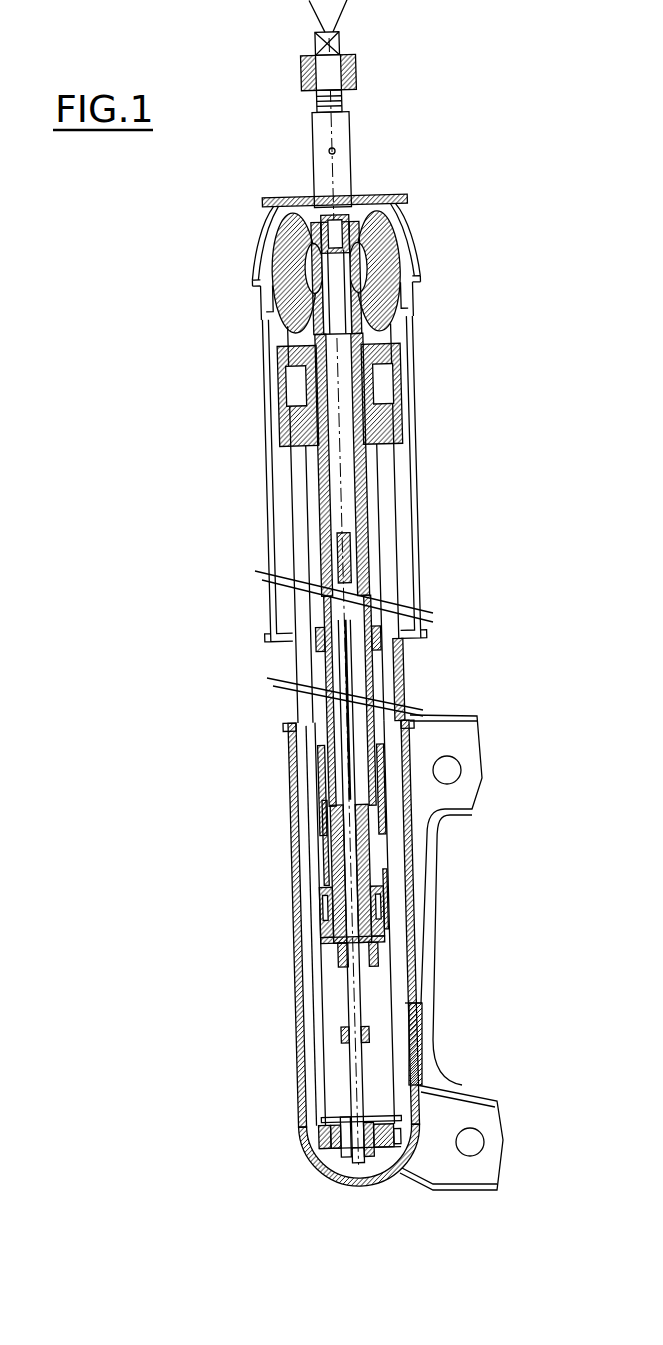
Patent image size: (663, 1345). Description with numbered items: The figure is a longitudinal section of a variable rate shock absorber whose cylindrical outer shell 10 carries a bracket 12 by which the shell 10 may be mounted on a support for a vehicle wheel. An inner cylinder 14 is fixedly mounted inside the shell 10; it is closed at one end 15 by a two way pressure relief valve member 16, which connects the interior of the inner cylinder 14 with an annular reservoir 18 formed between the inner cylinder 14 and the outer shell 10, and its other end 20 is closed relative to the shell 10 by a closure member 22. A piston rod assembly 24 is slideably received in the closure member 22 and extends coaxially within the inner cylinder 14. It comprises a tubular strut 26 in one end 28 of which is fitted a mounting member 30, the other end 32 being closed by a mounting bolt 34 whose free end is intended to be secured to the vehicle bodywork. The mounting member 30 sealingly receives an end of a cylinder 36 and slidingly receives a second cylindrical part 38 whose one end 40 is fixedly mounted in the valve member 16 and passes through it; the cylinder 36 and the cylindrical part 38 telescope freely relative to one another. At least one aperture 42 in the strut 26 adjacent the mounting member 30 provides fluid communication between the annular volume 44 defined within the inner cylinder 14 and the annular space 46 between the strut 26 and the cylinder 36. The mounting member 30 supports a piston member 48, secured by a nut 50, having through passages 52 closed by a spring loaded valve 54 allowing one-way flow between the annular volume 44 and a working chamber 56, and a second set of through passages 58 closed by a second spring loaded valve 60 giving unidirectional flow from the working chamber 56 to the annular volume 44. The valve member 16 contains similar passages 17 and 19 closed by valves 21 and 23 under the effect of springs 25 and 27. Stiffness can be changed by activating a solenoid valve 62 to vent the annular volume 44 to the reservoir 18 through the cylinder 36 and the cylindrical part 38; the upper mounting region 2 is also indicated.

The upper mounting assembly 2 is at (262, 256).
The cylindrical outer shell 10 is at (290, 713).
The bracket 12 is at (452, 816).
The inner cylinder 14 is at (394, 673).
The one end of the inner cylinder 15 is at (318, 1130).
The two way pressure relief valve member 16 is at (330, 1162).
The passages 17 is at (372, 1120).
The annular reservoir 18 is at (310, 952).
The passages 19 is at (320, 1140).
The other end of the inner cylinder 20 is at (290, 477).
The valve 21 is at (400, 1156).
The closure member 22 is at (285, 410).
The valve 23 is at (396, 1116).
The piston rod assembly 24 is at (310, 538).
The spring 25 is at (372, 1175).
The tubular strut 26 is at (310, 560).
The spring 27 is at (438, 1083).
The one end of the tubular strut 28 is at (330, 850).
The mounting member 30 is at (378, 862).
The other end of the tubular strut 32 is at (393, 221).
The mounting bolt 34 is at (340, 150).
The cylinder 36 is at (333, 751).
The second cylindrical part 38 is at (342, 1013).
The one end of the cylindrical part 40 is at (352, 1120).
The aperture 42 is at (328, 785).
The annular volume 44 is at (297, 823).
The annular space 46 is at (288, 735).
The piston member 48 is at (370, 932).
The nut 50 is at (382, 997).
The through passages 52 is at (320, 930).
The spring loaded valve 54 is at (340, 957).
The working chamber 56 is at (405, 1000).
The second set of through passages 58 is at (392, 915).
The second spring loaded valve 60 is at (372, 882).
The solenoid valve 62 is at (410, 262).